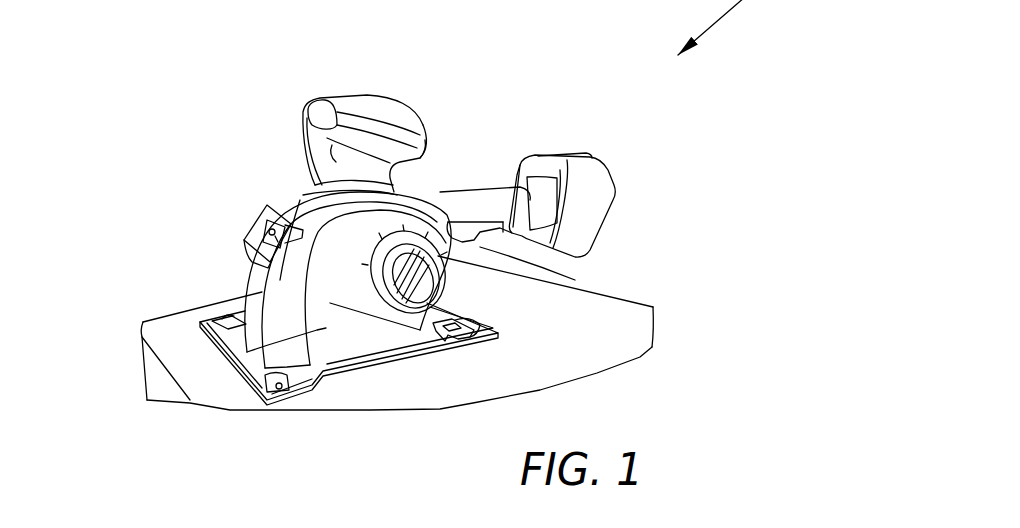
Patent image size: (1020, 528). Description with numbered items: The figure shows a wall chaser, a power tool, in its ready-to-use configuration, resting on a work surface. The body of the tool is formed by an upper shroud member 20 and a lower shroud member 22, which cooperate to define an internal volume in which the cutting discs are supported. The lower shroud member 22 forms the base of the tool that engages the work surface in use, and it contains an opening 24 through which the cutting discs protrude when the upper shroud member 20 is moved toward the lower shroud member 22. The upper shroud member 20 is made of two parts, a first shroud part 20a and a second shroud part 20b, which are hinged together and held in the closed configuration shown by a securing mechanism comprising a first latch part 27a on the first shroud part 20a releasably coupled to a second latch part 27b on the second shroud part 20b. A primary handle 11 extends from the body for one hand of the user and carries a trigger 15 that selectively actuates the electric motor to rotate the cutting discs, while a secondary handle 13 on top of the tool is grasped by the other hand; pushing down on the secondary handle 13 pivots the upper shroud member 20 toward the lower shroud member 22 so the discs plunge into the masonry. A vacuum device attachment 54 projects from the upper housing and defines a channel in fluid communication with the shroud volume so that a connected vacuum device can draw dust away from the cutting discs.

The primary handle 11 is at (487, 202).
The secondary handle 13 is at (398, 117).
The trigger 15 is at (487, 253).
The upper shroud member 20 is at (315, 193).
The first shroud part 20a is at (292, 203).
The second shroud part 20b is at (333, 287).
The lower shroud member 22 is at (265, 348).
The opening 24 is at (394, 365).
The first latch part 27a is at (262, 228).
The second latch part 27b is at (260, 250).
The vacuum device attachment 54 is at (427, 157).